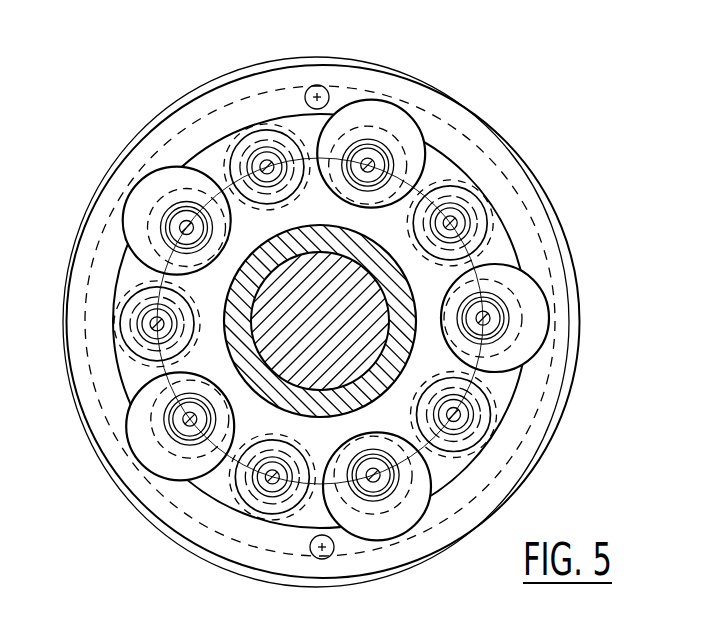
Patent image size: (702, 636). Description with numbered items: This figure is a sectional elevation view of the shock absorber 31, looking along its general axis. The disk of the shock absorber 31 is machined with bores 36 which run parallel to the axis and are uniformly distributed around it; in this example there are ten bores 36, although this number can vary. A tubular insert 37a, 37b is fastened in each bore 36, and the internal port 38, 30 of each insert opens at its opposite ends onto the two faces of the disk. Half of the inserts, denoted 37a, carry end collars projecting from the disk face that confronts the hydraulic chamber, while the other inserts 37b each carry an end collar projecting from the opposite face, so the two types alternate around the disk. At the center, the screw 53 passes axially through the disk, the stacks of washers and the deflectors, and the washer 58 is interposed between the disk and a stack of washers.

The shock absorber 31 is at (86, 192).
The internal port 30 is at (267, 167).
The bores 36 is at (455, 190).
The tubular insert 37a is at (505, 312).
The tubular insert 37b is at (473, 417).
The internal port 38 is at (186, 226).
The screw 53 is at (376, 291).
The washer 58 is at (397, 305).